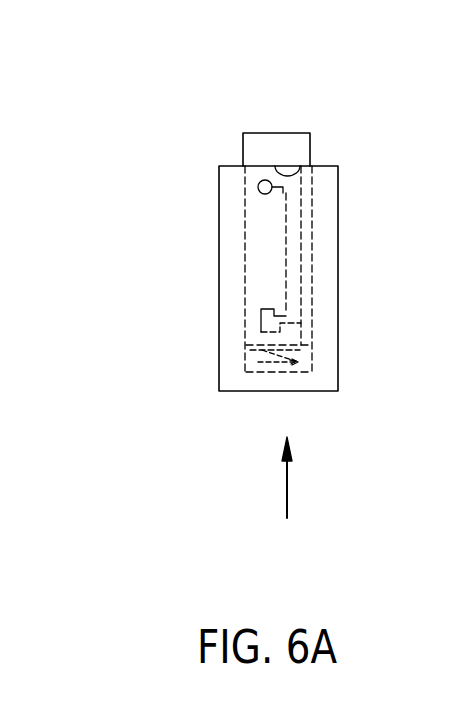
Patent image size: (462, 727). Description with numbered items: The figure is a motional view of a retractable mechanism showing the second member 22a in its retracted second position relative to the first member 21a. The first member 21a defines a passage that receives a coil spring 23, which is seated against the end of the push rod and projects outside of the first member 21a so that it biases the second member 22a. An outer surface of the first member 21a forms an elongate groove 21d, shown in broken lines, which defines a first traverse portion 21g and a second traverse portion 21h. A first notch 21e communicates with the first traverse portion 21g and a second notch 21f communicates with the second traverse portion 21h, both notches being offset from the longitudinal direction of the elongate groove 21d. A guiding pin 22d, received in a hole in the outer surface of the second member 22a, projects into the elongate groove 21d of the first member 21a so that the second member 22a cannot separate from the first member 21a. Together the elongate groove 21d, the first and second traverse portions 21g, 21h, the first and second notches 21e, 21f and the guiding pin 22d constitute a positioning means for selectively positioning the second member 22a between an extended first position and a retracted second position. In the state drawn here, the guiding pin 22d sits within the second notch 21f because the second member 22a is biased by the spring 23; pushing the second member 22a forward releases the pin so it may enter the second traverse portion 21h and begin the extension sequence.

The first member 21a is at (275, 132).
The second traverse portion 21h is at (307, 133).
The guiding pin 22d is at (263, 181).
The second notch 21f is at (262, 195).
The elongate groove 21d is at (292, 227).
The first notch 21e is at (262, 311).
The first traverse portion 21g is at (283, 323).
The second member 22a is at (338, 240).
The coil spring 23 is at (303, 367).